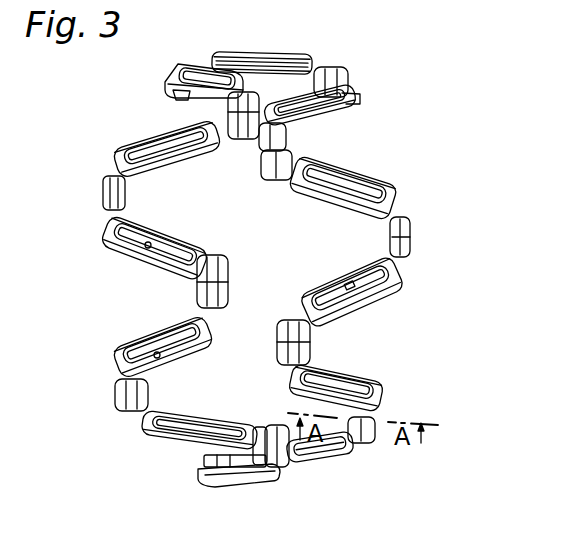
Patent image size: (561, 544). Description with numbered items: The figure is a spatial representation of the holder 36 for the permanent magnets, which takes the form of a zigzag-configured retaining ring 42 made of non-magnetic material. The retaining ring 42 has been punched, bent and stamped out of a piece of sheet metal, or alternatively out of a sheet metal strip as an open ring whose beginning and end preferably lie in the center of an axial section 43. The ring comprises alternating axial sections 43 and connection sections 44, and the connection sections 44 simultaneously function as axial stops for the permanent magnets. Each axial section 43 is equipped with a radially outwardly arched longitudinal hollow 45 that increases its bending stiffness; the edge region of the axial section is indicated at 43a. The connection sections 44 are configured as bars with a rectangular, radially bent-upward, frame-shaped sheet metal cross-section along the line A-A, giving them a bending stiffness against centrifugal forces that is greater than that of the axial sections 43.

The holder 36 is at (417, 140).
The retaining ring 42 is at (400, 187).
The axial section 43 is at (393, 295).
The link edge 43a is at (347, 277).
The connection section 44 is at (407, 237).
The longitudinal hollow 45 is at (338, 309).